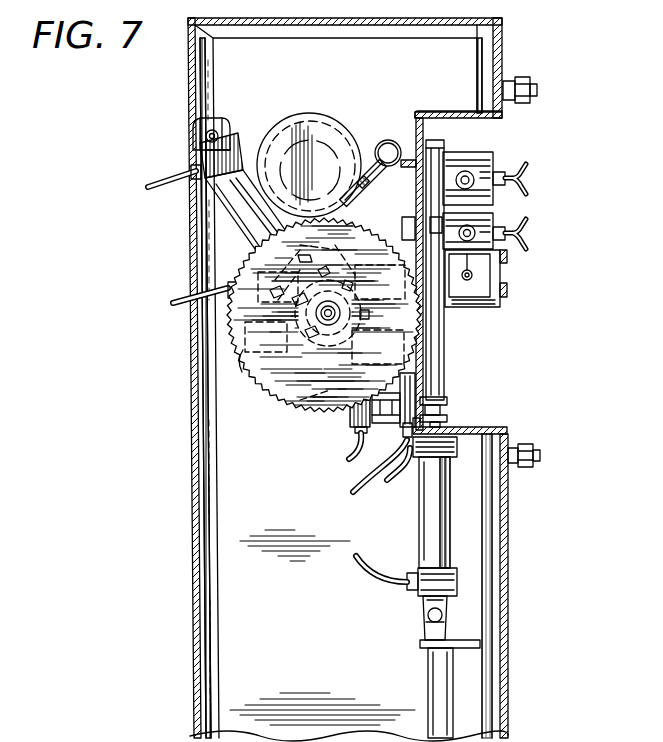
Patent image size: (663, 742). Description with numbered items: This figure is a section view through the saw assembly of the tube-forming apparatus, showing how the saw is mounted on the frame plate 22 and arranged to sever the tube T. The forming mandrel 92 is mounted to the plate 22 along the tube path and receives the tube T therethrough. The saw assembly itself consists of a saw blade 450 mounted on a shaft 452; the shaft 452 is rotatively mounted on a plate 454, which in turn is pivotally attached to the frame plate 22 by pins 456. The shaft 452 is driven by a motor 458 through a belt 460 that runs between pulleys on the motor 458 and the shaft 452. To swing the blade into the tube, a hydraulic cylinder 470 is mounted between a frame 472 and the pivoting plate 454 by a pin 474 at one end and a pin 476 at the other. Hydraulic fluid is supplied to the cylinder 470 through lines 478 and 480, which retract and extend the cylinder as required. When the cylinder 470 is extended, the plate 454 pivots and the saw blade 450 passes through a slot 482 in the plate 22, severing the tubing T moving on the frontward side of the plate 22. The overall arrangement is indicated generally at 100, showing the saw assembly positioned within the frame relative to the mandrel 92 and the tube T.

The plate 22 is at (473, 123).
The slide assembly 100 is at (532, 210).
The forming mandrel 92 is at (500, 268).
The tube T is at (474, 279).
The saw blade 450 is at (288, 402).
The shaft 452 is at (331, 330).
The plate 454 is at (358, 148).
The pins 456 is at (390, 143).
The motor 458 is at (302, 118).
The belt 460 is at (268, 130).
The hydraulic cylinder 470 is at (220, 236).
The frame 472 is at (222, 117).
The pin 474 is at (212, 137).
The pin 476 is at (242, 360).
The hydraulic line 478 is at (167, 188).
The hydraulic line 480 is at (212, 297).
The slot 482 is at (432, 397).